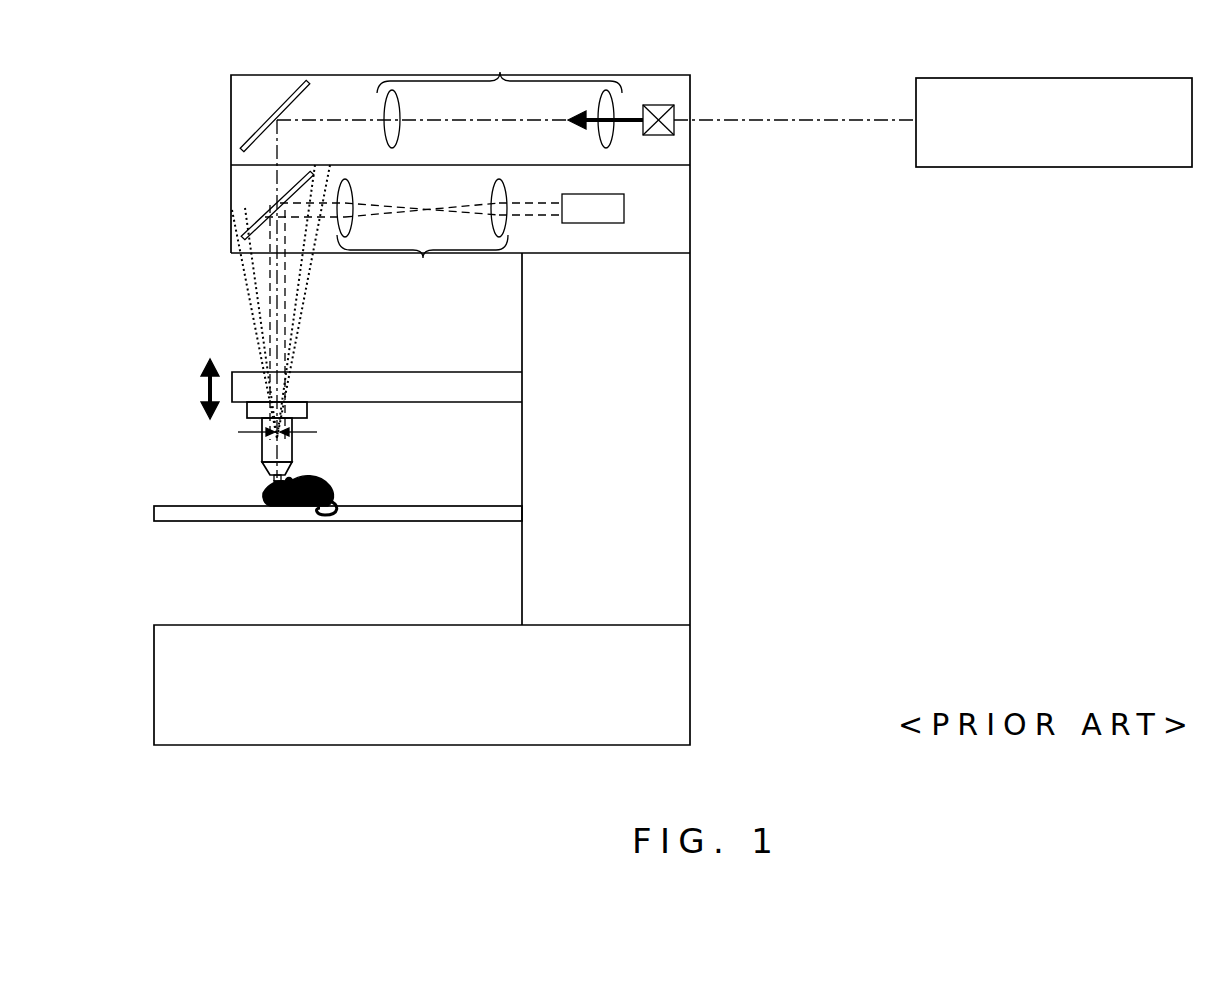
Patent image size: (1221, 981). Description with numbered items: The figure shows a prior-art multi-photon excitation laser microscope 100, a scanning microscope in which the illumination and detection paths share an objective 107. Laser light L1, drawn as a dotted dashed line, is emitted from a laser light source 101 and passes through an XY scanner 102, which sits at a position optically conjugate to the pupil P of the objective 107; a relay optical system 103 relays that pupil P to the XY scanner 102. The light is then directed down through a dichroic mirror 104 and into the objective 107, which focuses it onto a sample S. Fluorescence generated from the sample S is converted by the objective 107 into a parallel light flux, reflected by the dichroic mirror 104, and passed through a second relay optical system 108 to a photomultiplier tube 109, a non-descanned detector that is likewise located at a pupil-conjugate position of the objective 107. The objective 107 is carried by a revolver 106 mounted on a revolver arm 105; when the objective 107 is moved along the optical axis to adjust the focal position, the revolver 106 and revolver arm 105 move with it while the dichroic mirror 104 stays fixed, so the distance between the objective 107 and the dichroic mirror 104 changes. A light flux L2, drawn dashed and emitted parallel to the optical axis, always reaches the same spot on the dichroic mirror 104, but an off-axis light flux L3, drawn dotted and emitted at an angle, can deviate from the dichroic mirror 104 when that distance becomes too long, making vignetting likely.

The multi-photon excitation laser microscope 100 is at (1160, 50).
The laser light source 101 is at (945, 78).
The XY scanner 102 is at (660, 104).
The relay optical system 103 is at (499, 95).
The dichroic mirror 104 is at (264, 212).
The revolver arm 105 is at (242, 372).
The revolver 106 is at (248, 410).
The objective 107 is at (262, 453).
The relay optical system 108 is at (422, 234).
The photomultiplier tube 109 is at (624, 205).
The laser light L1 is at (748, 120).
The light flux on optical axis L2 is at (525, 205).
The off-axis light flux L3 is at (258, 305).
The pupil P is at (307, 432).
The sample S is at (323, 480).